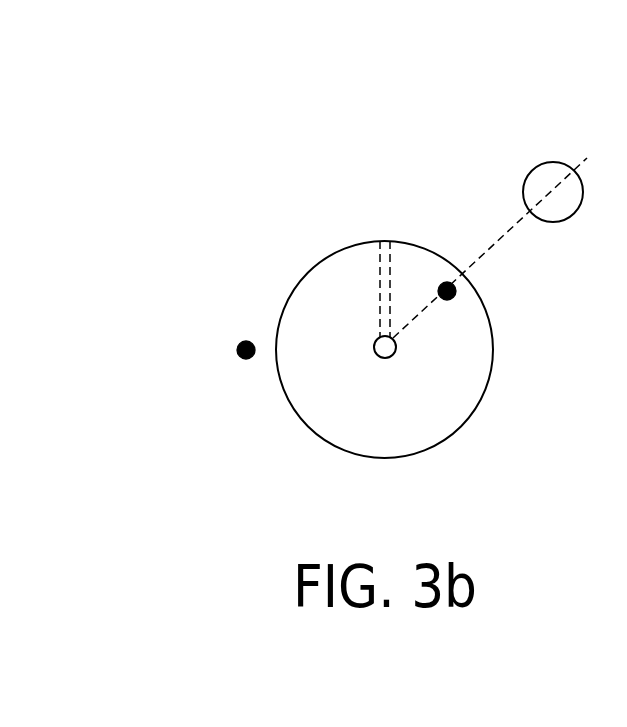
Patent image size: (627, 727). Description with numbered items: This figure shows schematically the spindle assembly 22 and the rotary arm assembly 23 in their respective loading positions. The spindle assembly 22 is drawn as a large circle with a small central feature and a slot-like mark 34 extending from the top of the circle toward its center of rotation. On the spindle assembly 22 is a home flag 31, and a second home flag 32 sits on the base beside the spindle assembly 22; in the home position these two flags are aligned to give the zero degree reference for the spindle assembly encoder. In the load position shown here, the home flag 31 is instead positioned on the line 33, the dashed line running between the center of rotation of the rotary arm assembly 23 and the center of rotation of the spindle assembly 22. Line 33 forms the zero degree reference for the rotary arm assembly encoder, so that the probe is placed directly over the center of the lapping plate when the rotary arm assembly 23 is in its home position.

The spindle assembly 22 is at (295, 285).
The rotary arm assembly 23 is at (537, 162).
The home flag 31 is at (450, 298).
The home flag 32 is at (245, 345).
The line 33 is at (493, 245).
The slot / center hub 34 is at (385, 241).